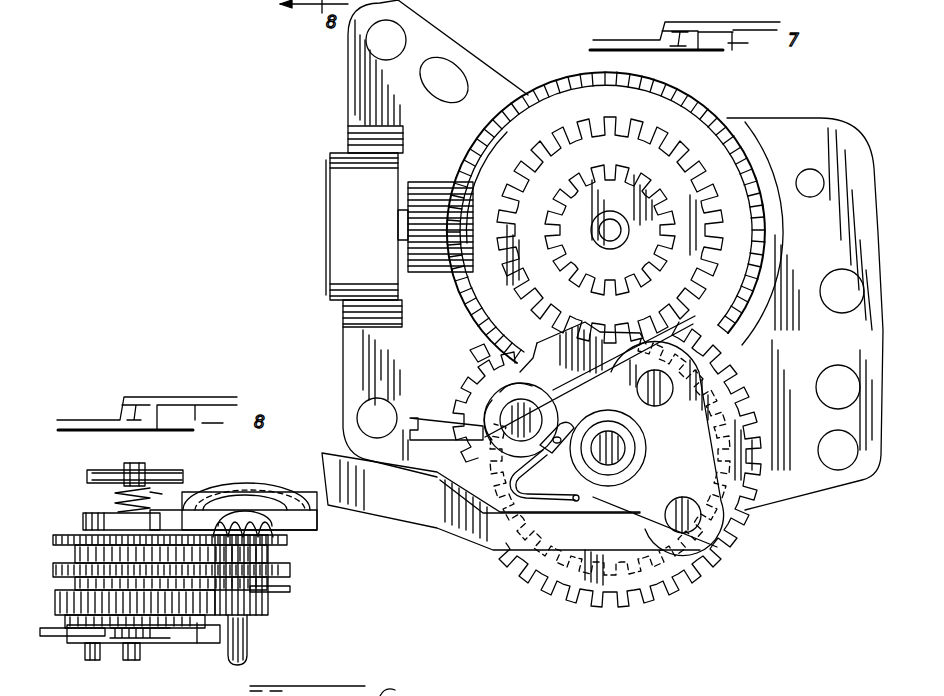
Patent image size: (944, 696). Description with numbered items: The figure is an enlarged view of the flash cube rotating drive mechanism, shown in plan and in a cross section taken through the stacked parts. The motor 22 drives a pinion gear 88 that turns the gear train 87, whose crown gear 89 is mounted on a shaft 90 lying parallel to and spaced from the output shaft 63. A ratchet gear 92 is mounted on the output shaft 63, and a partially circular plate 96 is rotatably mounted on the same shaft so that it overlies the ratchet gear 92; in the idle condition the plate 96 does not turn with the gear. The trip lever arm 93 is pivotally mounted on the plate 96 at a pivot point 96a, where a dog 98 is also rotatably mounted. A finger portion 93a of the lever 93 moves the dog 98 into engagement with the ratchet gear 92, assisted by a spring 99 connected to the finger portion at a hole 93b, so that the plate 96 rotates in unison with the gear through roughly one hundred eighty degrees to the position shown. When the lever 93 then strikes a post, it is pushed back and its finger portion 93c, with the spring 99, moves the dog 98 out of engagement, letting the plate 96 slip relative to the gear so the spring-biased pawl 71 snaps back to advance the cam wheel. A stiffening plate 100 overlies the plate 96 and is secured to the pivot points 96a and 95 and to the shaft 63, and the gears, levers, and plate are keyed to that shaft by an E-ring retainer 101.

In FIG. 7, the motor 22 is at (345, 210).
In FIG. 7, the output shaft 63 is at (612, 447).
In FIG. 8, the output shaft 63 is at (142, 468).
In FIG. 7, the pawl 71 is at (390, 500).
In FIG. 7, the gear train 87 is at (722, 117).
In FIG. 8, the gear train 87 is at (56, 536).
In FIG. 7, the pinion gear 88 is at (433, 252).
In FIG. 7, the crown gear 89 is at (548, 76).
In FIG. 8, the crown gear 89 is at (283, 524).
In FIG. 7, the shaft 90 is at (613, 228).
In FIG. 8, the shaft 90 is at (248, 635).
In FIG. 7, the ratchet gear 92 is at (478, 357).
In FIG. 7, the lever arm 93 is at (471, 409).
In FIG. 8, the lever arm 93 is at (50, 638).
In FIG. 7, the finger portion 93a is at (573, 357).
In FIG. 7, the hole 93b is at (557, 455).
In FIG. 7, the finger portion 93c is at (446, 417).
In FIG. 7, the pivot point 95 is at (672, 518).
In FIG. 7, the partially circular plate 96 is at (732, 386).
In FIG. 8, the partially circular plate 96 is at (203, 645).
In FIG. 7, the pivot point 96a is at (634, 388).
In FIG. 8, the pivot point 96a is at (93, 660).
In FIG. 7, the dog 98 is at (502, 385).
In FIG. 7, the spring 99 is at (556, 500).
In FIG. 7, the stiffening plate 100 is at (660, 511).
In FIG. 7, the E-ring retainer 101 is at (632, 462).